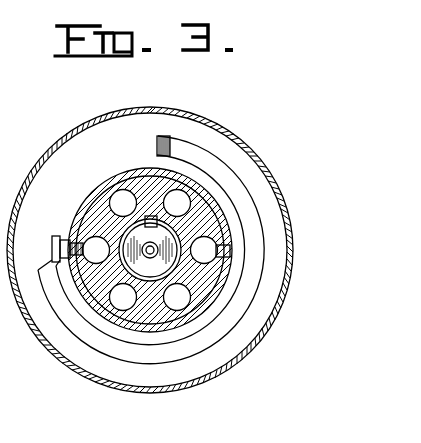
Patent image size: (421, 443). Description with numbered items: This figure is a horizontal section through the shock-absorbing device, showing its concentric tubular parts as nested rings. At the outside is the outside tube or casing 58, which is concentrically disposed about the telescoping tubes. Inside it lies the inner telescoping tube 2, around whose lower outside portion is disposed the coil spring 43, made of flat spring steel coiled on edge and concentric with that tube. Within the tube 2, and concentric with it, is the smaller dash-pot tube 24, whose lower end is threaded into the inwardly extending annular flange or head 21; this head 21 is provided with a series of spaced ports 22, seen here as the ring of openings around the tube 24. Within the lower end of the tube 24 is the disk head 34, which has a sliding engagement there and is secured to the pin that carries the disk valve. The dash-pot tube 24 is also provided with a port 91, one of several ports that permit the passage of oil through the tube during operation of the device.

The inner telescoping tube 2 is at (232, 272).
The annular flange or head 21 is at (135, 197).
The spaced ports 22 is at (118, 205).
The dash-pot tube 24 is at (150, 281).
The disk head 34 is at (143, 270).
The coil spring 43 is at (212, 381).
The outside tube or casing 58 is at (283, 306).
The port 91 is at (151, 216).